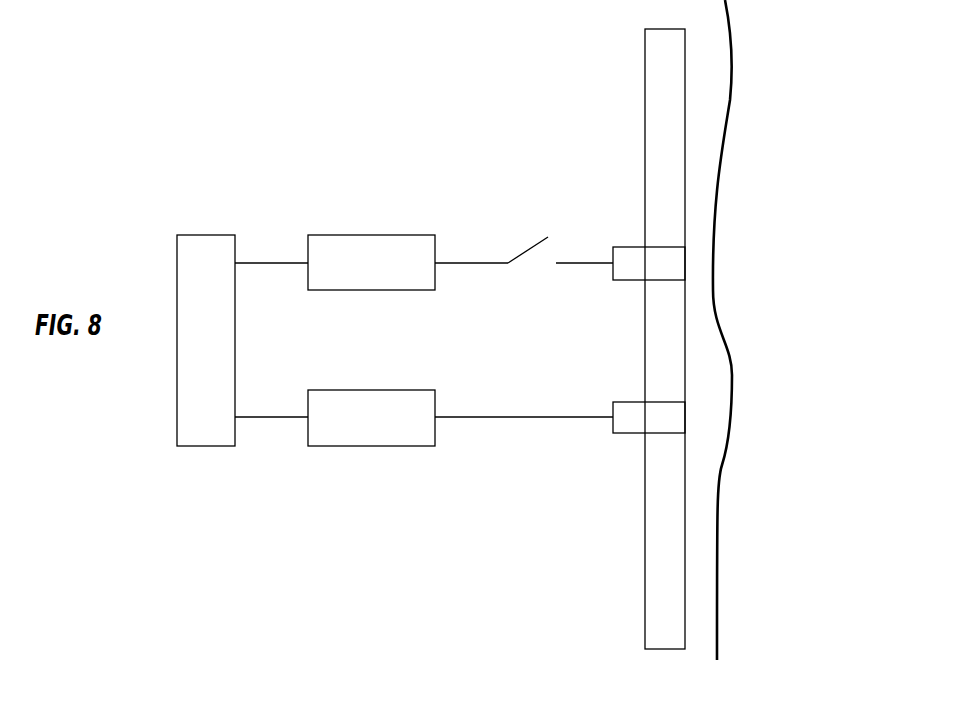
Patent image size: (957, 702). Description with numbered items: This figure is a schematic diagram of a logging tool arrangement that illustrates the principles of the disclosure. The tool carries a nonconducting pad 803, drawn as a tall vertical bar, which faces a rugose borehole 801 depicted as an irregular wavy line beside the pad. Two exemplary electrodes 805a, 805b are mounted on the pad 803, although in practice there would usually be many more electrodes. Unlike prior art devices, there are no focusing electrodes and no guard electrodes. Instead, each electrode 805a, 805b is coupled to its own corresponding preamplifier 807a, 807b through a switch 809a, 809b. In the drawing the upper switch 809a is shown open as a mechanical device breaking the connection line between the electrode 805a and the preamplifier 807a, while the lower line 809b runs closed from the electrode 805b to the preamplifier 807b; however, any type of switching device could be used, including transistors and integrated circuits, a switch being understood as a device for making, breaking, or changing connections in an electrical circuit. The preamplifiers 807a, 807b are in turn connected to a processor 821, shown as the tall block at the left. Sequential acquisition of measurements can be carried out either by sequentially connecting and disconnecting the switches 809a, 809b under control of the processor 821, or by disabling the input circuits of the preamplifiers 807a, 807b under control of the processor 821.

The rugose borehole 801 is at (730, 100).
The nonconducting pad 803 is at (645, 70).
The electrode 805a is at (632, 247).
The electrode 805b is at (632, 402).
The preamplifier 807a is at (332, 235).
The preamplifier 807b is at (332, 390).
The switch 809a is at (533, 247).
The switch 809b is at (525, 416).
The processor 821 is at (192, 235).